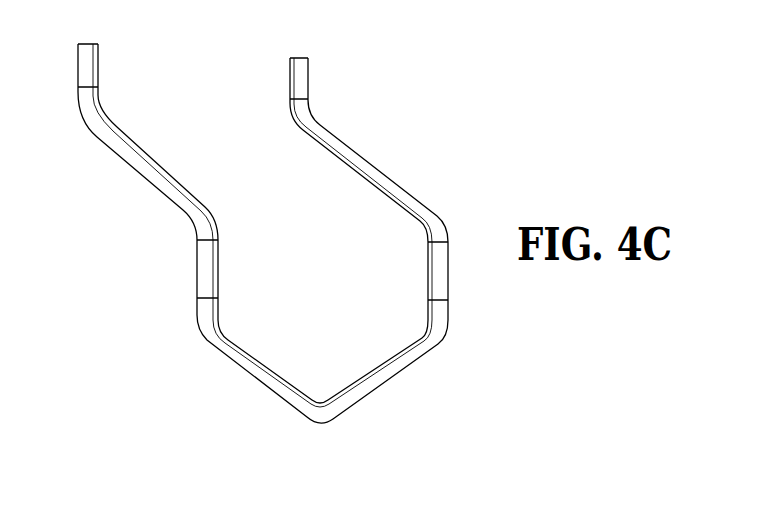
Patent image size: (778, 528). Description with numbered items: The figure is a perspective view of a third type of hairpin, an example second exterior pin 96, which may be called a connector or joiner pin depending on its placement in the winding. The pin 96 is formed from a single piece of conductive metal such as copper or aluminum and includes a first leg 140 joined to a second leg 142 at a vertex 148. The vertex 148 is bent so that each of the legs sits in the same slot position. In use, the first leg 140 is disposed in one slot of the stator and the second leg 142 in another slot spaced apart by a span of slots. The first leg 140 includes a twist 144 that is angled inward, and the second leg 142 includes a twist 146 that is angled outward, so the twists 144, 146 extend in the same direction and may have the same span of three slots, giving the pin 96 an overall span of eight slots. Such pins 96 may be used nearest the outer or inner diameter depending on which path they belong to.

The second exterior pin 96 is at (433, 59).
The first leg 140 is at (440, 270).
The second leg 142 is at (203, 277).
The twist 144 is at (370, 168).
The twist 146 is at (138, 163).
The vertex 148 is at (323, 422).